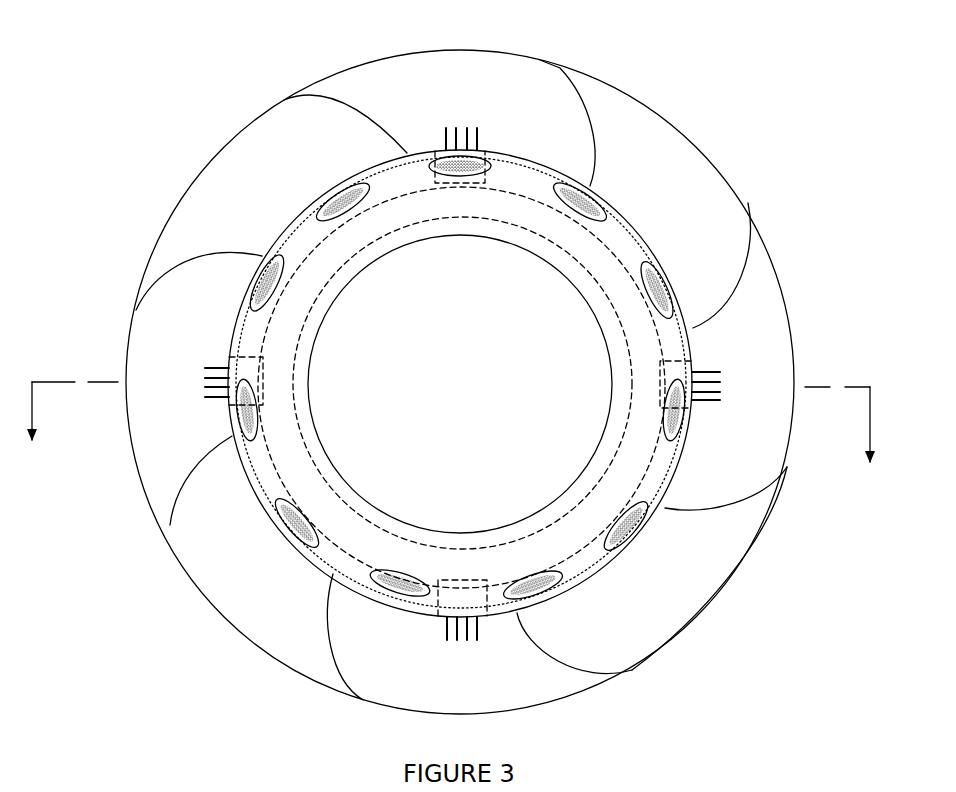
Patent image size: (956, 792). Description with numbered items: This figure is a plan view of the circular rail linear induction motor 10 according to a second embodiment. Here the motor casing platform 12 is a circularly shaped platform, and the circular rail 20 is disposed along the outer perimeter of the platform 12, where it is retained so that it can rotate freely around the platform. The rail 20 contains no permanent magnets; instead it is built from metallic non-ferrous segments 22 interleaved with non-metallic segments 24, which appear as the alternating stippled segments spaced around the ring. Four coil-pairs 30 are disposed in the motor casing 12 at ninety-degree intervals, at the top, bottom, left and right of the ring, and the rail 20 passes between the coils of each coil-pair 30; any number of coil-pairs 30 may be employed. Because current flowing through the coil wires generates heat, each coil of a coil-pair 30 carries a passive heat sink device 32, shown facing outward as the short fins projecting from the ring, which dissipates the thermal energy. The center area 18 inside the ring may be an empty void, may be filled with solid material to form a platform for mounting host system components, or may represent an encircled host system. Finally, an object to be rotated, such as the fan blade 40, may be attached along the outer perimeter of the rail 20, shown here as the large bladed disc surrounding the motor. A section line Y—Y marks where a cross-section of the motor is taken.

The circular rail linear induction motor 10 is at (686, 76).
The motor casing platform 12 is at (298, 299).
The center area 18 is at (528, 357).
The circular rail 20 is at (262, 495).
The metallic non-ferrous segments 22 is at (333, 557).
The non-metallic segments 24 is at (292, 513).
The coil-pairs 30 is at (231, 366).
The passive heat sink device 32 is at (201, 398).
The fan blade 40 is at (694, 156).